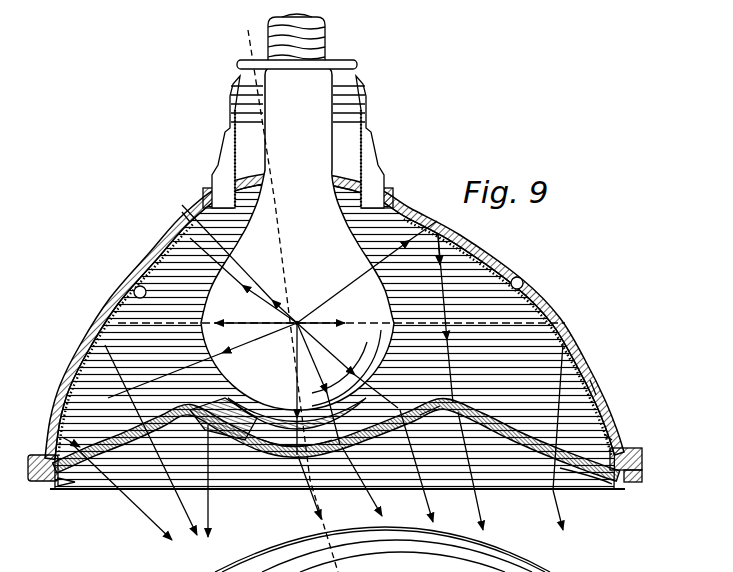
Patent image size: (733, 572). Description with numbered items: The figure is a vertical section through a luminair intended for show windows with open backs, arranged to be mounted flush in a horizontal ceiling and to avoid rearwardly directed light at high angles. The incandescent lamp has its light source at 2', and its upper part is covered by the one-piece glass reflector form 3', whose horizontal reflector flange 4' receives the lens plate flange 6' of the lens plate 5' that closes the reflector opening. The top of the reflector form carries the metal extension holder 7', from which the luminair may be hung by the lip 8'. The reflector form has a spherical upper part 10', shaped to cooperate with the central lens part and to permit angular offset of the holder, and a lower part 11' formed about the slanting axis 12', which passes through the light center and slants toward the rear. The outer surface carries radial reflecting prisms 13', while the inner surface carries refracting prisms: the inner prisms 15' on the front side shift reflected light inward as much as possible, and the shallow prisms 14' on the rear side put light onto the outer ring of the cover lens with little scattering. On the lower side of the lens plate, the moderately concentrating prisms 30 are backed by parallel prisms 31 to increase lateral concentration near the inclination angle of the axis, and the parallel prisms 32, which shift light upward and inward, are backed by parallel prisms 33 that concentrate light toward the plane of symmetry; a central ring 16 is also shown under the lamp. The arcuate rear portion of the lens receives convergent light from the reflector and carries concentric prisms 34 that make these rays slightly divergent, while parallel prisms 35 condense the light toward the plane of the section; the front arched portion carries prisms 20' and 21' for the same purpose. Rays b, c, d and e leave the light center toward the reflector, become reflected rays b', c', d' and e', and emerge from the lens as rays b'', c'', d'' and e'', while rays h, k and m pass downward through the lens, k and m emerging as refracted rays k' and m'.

The reflector form 3' is at (334, 330).
The reflector flange 4' is at (636, 459).
The lens plate 5' is at (344, 497).
The lens plate flange 6' is at (643, 478).
The metal extension holder 7' is at (305, 142).
The lip 8' is at (313, 65).
The upper spherical part of reflector form 10' is at (166, 217).
The lower part of reflector form 11' is at (335, 339).
The slanting axis 12' is at (297, 293).
The radial reflecting prisms 13' is at (607, 383).
The shallow inner prisms on rear side 14' is at (534, 280).
The inner prisms on front side 15' is at (123, 286).
The central ring 16 is at (272, 426).
The front arched-portion prisms 20' is at (45, 480).
The front arched-portion prisms 21' is at (85, 492).
The concentrating prisms 30 is at (275, 482).
The parallel backing prisms 31 is at (240, 420).
The parallel prisms 32 is at (387, 482).
The parallel backing prisms 33 is at (297, 434).
The concentric prisms 34 is at (570, 485).
The parallel prisms 35 is at (612, 442).
The light source 2' is at (341, 312).
The light ray b is at (367, 272).
The light ray c is at (336, 315).
The light ray d is at (256, 315).
The light ray e is at (202, 360).
The light ray h is at (314, 511).
The light ray k is at (318, 384).
The light ray m is at (347, 365).
The reflected ray b' is at (332, 264).
The emergent ray b'' is at (468, 382).
The reflected ray c' is at (571, 409).
The emergent ray c'' is at (550, 510).
The reflected ray d' is at (131, 431).
The emergent ray d'' is at (188, 481).
The reflected ray e' is at (102, 478).
The emergent ray e'' is at (112, 488).
The refracted ray k' is at (362, 485).
The refracted ray m' is at (431, 466).